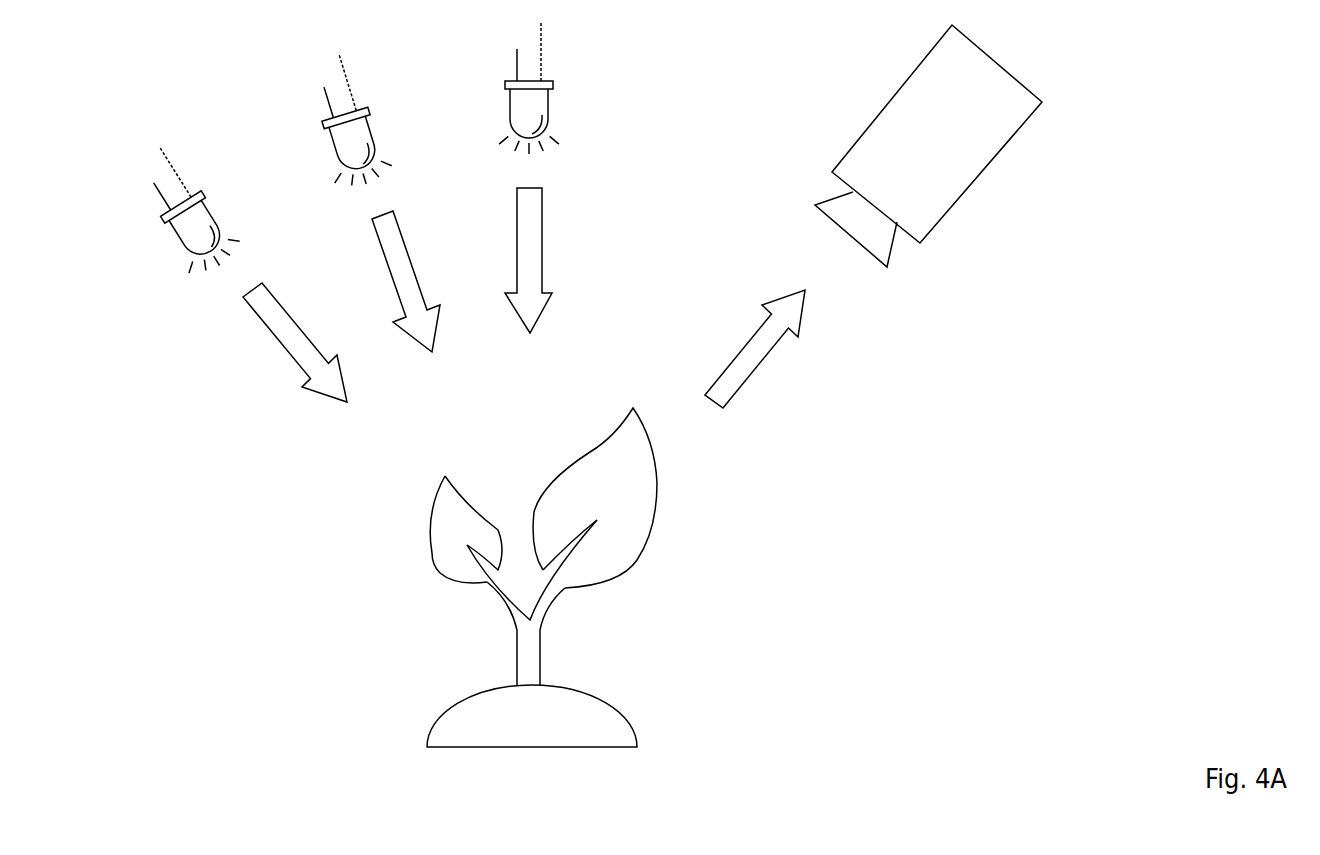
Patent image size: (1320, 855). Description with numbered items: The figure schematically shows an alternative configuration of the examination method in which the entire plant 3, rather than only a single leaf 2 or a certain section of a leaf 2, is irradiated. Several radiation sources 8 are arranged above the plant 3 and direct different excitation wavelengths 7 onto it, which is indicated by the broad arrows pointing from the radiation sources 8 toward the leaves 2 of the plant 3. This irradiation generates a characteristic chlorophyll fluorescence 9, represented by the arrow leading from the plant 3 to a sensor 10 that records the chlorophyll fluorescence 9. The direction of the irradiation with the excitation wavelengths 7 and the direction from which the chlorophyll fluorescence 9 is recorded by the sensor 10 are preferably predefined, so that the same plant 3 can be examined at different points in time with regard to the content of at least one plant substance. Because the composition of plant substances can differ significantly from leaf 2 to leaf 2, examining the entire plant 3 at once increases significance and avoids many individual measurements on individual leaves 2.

The leaf 2 is at (433, 557).
The plant 3 is at (637, 558).
The excitation wavelength 7 is at (252, 363).
The radiation source 8 is at (138, 245).
The chlorophyll fluorescence 9 is at (760, 347).
The sensor 10 is at (960, 162).